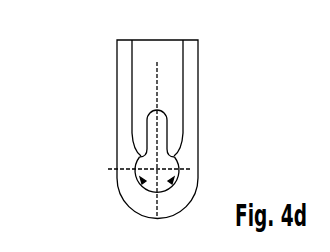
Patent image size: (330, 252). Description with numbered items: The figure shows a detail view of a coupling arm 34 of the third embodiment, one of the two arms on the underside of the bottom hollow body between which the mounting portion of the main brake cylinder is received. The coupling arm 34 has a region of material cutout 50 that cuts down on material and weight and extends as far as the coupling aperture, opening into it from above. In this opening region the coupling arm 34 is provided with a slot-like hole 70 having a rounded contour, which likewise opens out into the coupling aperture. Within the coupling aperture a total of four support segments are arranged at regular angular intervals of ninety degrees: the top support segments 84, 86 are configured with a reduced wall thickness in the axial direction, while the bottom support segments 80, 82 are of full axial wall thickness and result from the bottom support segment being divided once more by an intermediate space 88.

The coupling arm 34 is at (111, 82).
The material cutout 50 is at (147, 60).
The slot-like hole 70 is at (167, 119).
The bottom support segment 80 is at (178, 182).
The bottom support segment 82 is at (142, 181).
The top support segment 84 is at (177, 153).
The top support segment 86 is at (138, 152).
The intermediate space 88 is at (150, 186).